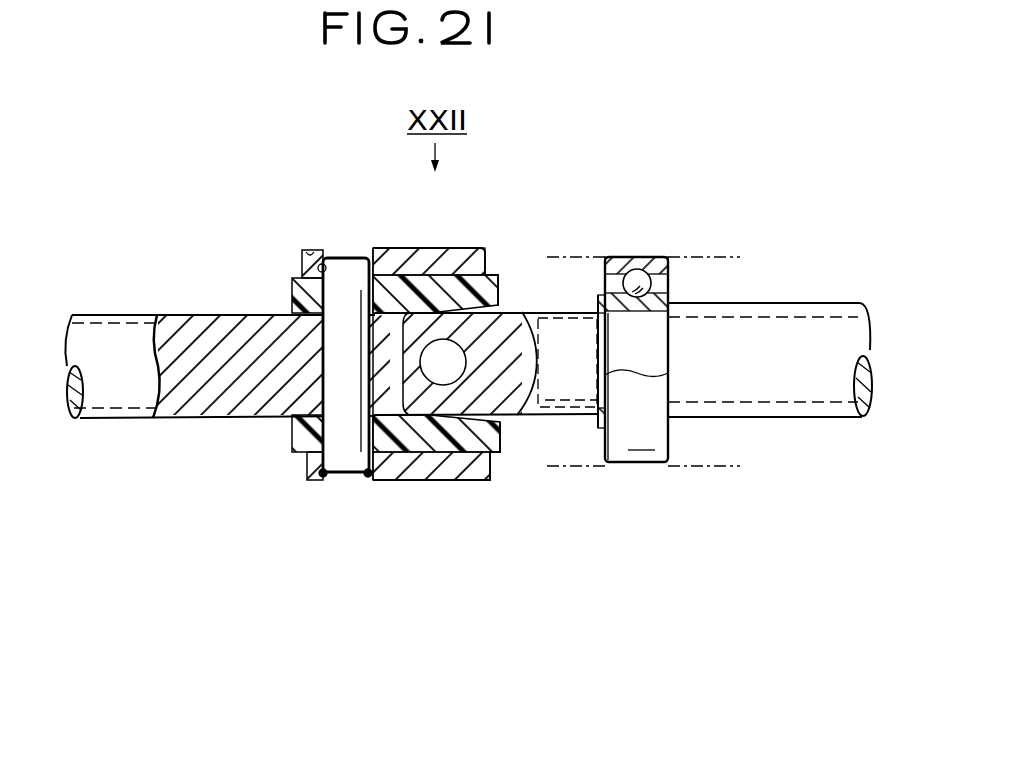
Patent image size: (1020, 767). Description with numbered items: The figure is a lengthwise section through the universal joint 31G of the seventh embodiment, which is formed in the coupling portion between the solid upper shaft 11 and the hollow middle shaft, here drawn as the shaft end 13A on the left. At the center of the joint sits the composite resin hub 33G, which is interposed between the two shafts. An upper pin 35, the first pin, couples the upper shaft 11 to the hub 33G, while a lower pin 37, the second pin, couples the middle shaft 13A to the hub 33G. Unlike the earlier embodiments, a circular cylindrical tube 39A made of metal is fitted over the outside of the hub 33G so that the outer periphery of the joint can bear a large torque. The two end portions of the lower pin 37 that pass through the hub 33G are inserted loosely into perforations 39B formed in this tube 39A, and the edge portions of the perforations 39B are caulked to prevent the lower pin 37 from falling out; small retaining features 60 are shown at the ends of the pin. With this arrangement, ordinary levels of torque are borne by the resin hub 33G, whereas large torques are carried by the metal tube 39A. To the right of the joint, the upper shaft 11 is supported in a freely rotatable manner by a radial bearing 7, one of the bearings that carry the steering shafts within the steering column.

The input shaft 13A is at (118, 328).
The perforations 39B is at (305, 272).
The snap ring 60 is at (318, 253).
The circular cylindrical tube 39A is at (423, 249).
The universal joint 31G is at (499, 240).
The hub 33G is at (500, 289).
The upper shaft 11 is at (790, 313).
The upper pin 35 is at (453, 372).
The lower pin 37 is at (350, 447).
The radial bearing 7 is at (642, 446).